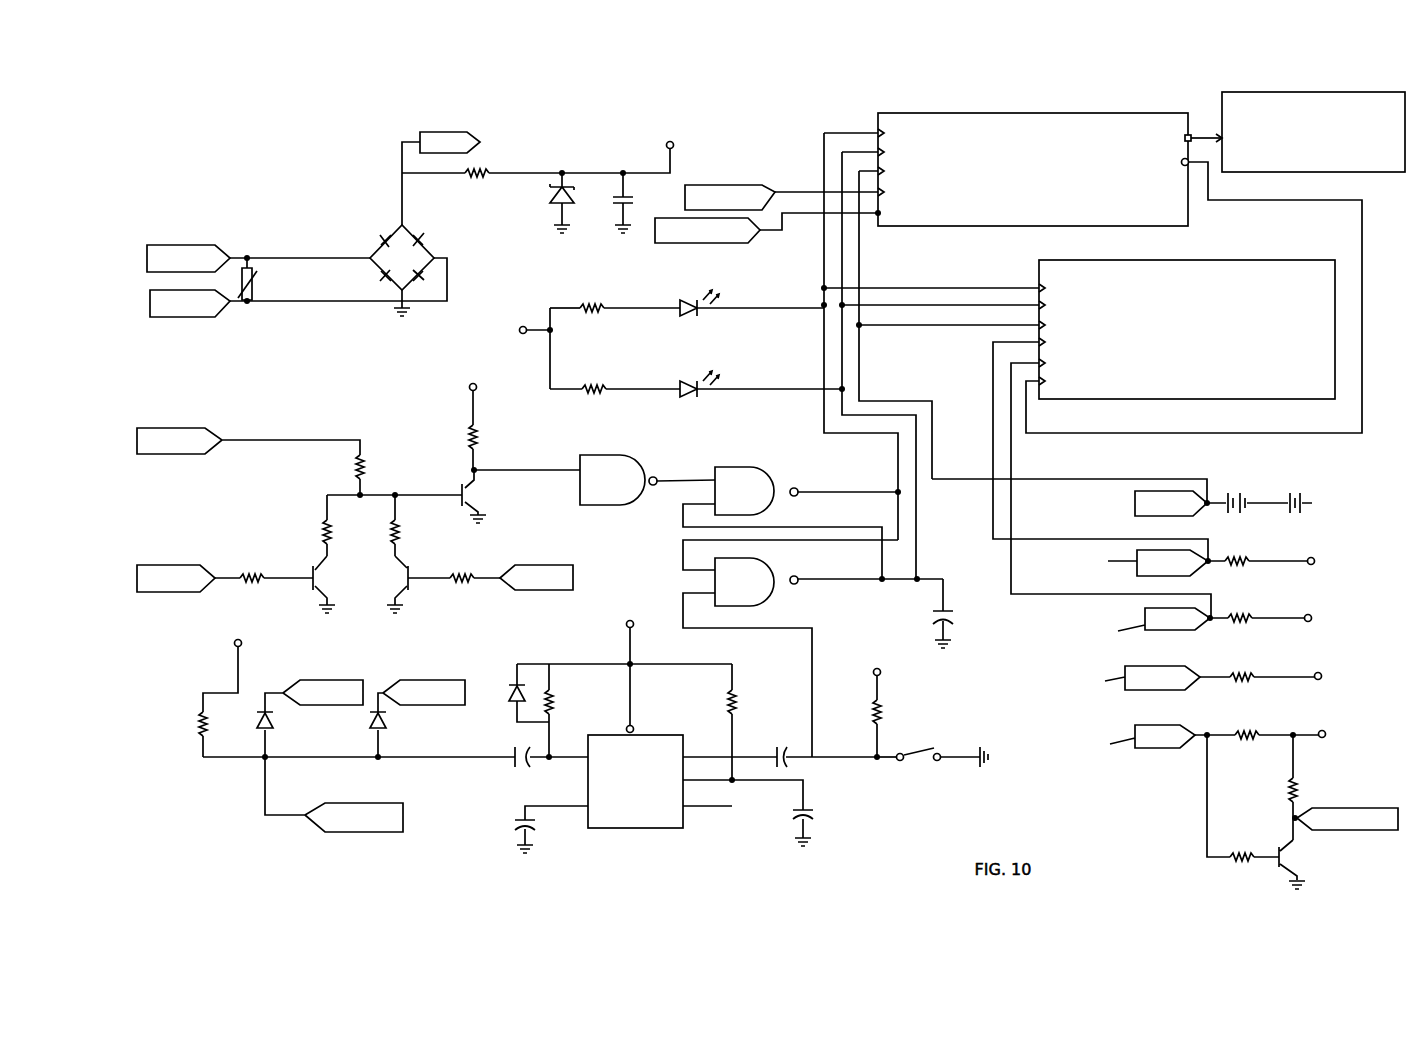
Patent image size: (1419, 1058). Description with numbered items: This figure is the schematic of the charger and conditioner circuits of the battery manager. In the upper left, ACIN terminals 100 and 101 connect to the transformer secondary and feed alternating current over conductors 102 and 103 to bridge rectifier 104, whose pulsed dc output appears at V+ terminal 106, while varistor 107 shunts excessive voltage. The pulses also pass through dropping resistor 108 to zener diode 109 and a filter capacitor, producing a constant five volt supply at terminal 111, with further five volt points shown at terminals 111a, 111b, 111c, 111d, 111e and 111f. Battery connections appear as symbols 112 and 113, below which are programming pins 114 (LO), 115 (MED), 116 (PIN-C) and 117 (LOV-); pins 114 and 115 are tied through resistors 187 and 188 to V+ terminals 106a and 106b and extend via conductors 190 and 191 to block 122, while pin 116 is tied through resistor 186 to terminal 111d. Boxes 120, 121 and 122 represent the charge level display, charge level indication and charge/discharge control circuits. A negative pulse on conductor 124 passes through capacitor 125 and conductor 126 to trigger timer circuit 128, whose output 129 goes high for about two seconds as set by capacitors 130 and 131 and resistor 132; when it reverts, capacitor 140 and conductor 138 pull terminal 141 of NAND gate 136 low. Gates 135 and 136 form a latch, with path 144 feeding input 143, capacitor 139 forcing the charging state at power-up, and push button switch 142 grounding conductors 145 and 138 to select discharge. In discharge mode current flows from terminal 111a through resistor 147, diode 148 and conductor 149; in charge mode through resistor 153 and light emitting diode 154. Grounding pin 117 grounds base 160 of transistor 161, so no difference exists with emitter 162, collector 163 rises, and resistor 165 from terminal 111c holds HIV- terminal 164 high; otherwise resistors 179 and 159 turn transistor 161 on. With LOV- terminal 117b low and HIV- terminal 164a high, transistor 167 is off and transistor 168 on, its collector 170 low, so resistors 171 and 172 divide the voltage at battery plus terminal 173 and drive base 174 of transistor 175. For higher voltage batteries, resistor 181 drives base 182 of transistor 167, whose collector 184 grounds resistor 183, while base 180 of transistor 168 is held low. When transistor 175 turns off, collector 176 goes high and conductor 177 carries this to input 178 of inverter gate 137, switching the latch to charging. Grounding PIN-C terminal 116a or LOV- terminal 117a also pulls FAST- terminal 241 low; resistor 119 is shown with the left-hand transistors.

The ACIN terminal 100 is at (222, 246).
The ACIN terminal 101 is at (207, 310).
The conductor 102 is at (270, 258).
The conductor 103 is at (238, 306).
The bridge rectifier 104 is at (432, 262).
The V+ terminal 106 is at (476, 141).
The varistor 107 is at (241, 293).
The dropping resistor 108 is at (488, 172).
The zener diode 109 is at (558, 200).
The 5 volt terminal 111 is at (676, 146).
The 5 volt supply terminal 111a is at (523, 326).
The 5 volt terminal 111b is at (470, 389).
The plus 5 volt terminal 111c is at (1330, 730).
The 5 volt terminal 111d is at (1323, 675).
The 5 volt terminal 111e is at (232, 650).
The 5 volt terminal 111f is at (634, 631).
The battery terminal 112 is at (1135, 509).
The battery terminal 113 is at (1310, 504).
The programming pin LO 114 is at (1141, 563).
The programming pin MED 115 is at (1149, 626).
The programming pin PIN-C 116 is at (1136, 679).
The PIN-C terminal 116a is at (340, 691).
The programming pin LOV- 117 is at (1135, 740).
The LOV- terminal 117a is at (459, 681).
The LOV- terminal 117b is at (195, 566).
The resistor R6 119 is at (470, 576).
The charge level display circuits 120 is at (1388, 152).
The charge level indication circuits 121 is at (882, 116).
The charge/discharge control circuits 122 is at (1323, 333).
The conductor 124 is at (457, 759).
The capacitor 125 is at (512, 755).
The conductor 126 is at (578, 750).
The timer circuit 128 is at (672, 822).
The timer output 129 is at (684, 735).
The capacitor 130 is at (545, 823).
The capacitor 131 is at (796, 816).
The resistor 132 is at (728, 710).
The NAND gate U1A 135 is at (769, 483).
The NAND gate U1B 136 is at (797, 584).
The NAND gate U1C 137 is at (634, 468).
The conductor 138 is at (816, 662).
The capacitor 139 is at (948, 605).
The capacitor 140 is at (795, 762).
The terminal of NAND gate 136 141 is at (792, 535).
The push button switch 142 is at (892, 768).
The input pin of NAND gate 135 143 is at (733, 502).
The path 144 is at (683, 527).
The conductor 145 is at (869, 757).
The resistor 147 is at (576, 308).
The diode 148 is at (722, 305).
The conductor 149 is at (822, 258).
The resistor 153 is at (586, 395).
The light emitting diode 154 is at (673, 396).
The resistor 159 is at (1233, 864).
The base 160 is at (1284, 870).
The transistor 161 is at (1273, 851).
The emitter 162 is at (1303, 882).
The collector 163 is at (1295, 818).
The HIV- terminal 164 is at (1381, 811).
The HIV- terminal 164a is at (576, 569).
The resistor 165 is at (1290, 786).
The transistor 167 is at (319, 568).
The transistor 168 is at (410, 586).
The collector 170 is at (392, 583).
The resistor 171 is at (355, 470).
The resistor 172 is at (399, 512).
The battery plus terminal 173 is at (218, 433).
The base 174 is at (459, 501).
The transistor 175 is at (480, 496).
The collector 176 is at (477, 464).
The conductor 177 is at (482, 472).
The input of NAND gate 137 178 is at (580, 496).
The resistor 179 is at (1261, 735).
The base 180 is at (410, 592).
The resistor 181 is at (222, 581).
The base 182 is at (320, 591).
The resistor 183 is at (323, 527).
The collector 184 is at (321, 577).
The resistor 186 is at (1230, 681).
The resistor 187 is at (1252, 561).
The resistor 188 is at (1256, 618).
The conductor 190 is at (1168, 541).
The conductor 191 is at (1062, 594).
The FAST- terminal 241 is at (338, 803).
The V+ terminal 106a is at (1314, 565).
The V+ terminal 106b is at (1312, 622).